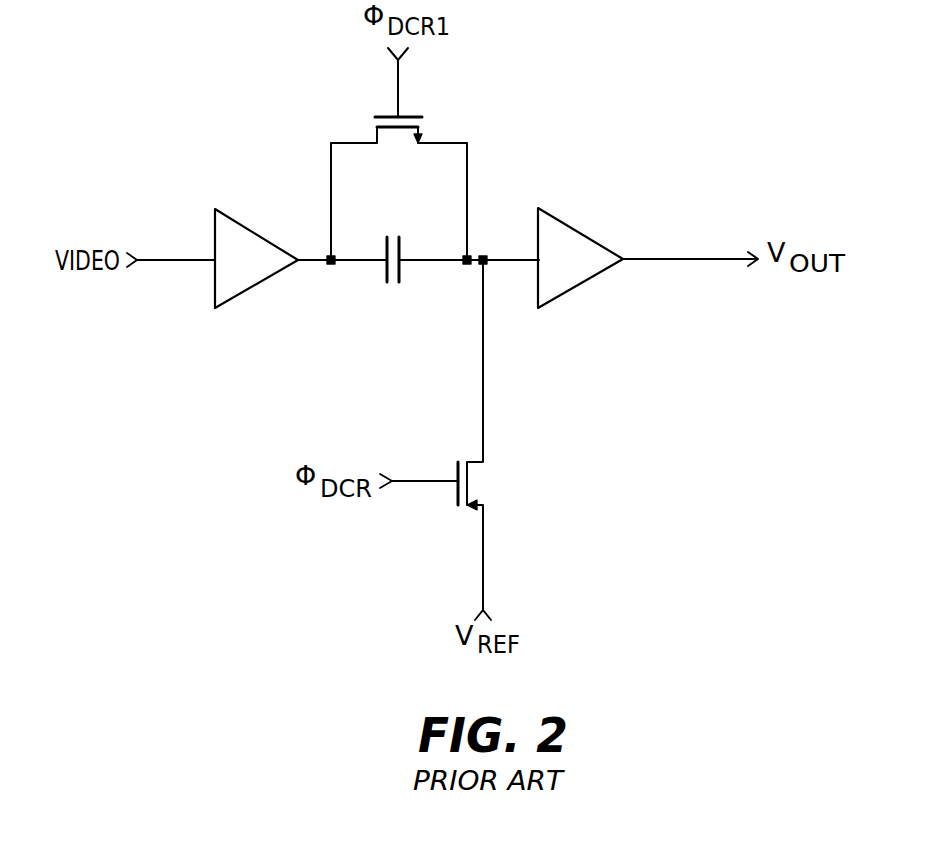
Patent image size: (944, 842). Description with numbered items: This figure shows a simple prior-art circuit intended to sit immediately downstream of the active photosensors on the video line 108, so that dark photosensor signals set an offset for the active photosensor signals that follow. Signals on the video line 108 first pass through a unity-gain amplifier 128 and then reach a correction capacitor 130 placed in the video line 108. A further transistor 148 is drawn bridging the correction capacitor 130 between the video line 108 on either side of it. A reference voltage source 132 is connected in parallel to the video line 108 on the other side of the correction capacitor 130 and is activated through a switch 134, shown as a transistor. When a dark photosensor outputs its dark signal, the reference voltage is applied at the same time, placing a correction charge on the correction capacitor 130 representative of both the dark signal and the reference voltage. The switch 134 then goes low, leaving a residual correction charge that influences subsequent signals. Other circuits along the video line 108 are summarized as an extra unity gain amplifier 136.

The video line 108 is at (183, 262).
The unity-gain amplifier 128 is at (270, 271).
The correction capacitor 130 is at (383, 268).
The reset transistor switch 148 is at (407, 105).
The extra unity gain amplifier 136 is at (592, 269).
The switch 134 is at (492, 483).
The source 132 is at (486, 588).